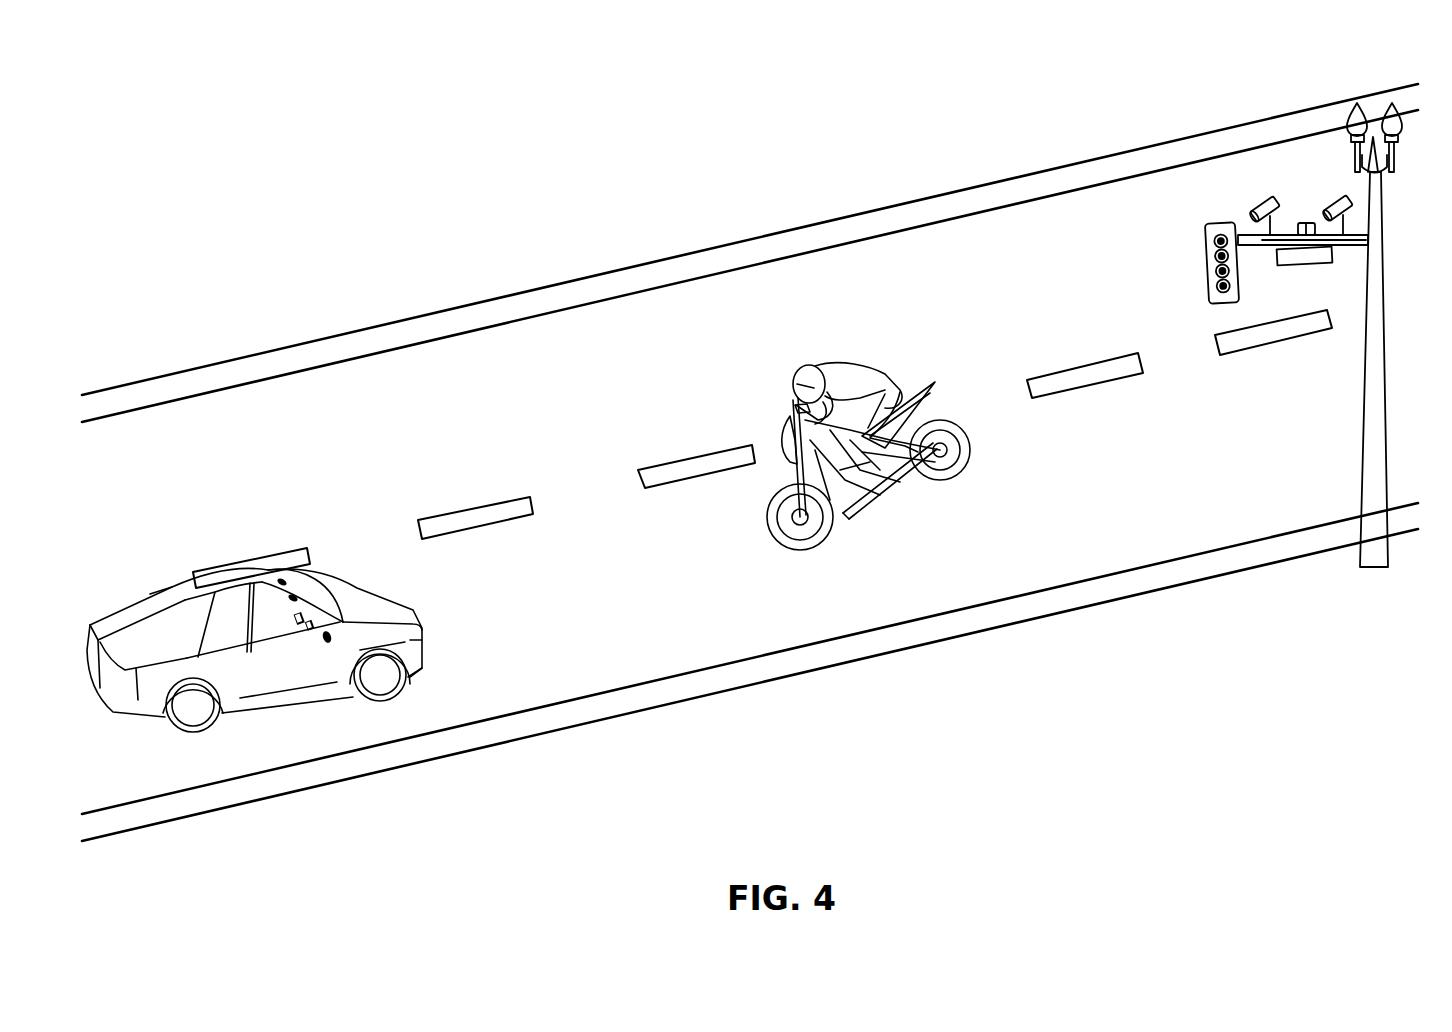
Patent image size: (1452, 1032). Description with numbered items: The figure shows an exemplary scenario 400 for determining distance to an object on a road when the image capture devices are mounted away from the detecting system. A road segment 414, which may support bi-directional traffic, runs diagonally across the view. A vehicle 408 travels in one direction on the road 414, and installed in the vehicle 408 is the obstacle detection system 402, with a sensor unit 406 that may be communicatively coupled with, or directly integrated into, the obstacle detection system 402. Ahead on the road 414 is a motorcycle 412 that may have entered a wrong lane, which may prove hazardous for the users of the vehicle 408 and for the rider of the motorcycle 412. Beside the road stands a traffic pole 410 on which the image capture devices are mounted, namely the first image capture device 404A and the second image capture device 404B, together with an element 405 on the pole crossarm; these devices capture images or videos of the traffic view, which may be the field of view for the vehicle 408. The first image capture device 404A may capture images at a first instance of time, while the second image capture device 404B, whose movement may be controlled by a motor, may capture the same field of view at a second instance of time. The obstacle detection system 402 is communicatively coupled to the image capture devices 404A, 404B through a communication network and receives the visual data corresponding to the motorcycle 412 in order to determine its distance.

The traffic environment 400 is at (262, 106).
The obstacle detection system 402 is at (288, 640).
The first image capture device 404A is at (1263, 197).
The second image capture device 404B is at (1353, 200).
The sensor unit 405 is at (1313, 222).
The sensor unit 406 is at (277, 620).
The vehicle 408 is at (152, 590).
The traffic pole 410 is at (1362, 412).
The motorcycle 412 is at (912, 388).
The road segment 414 is at (368, 388).